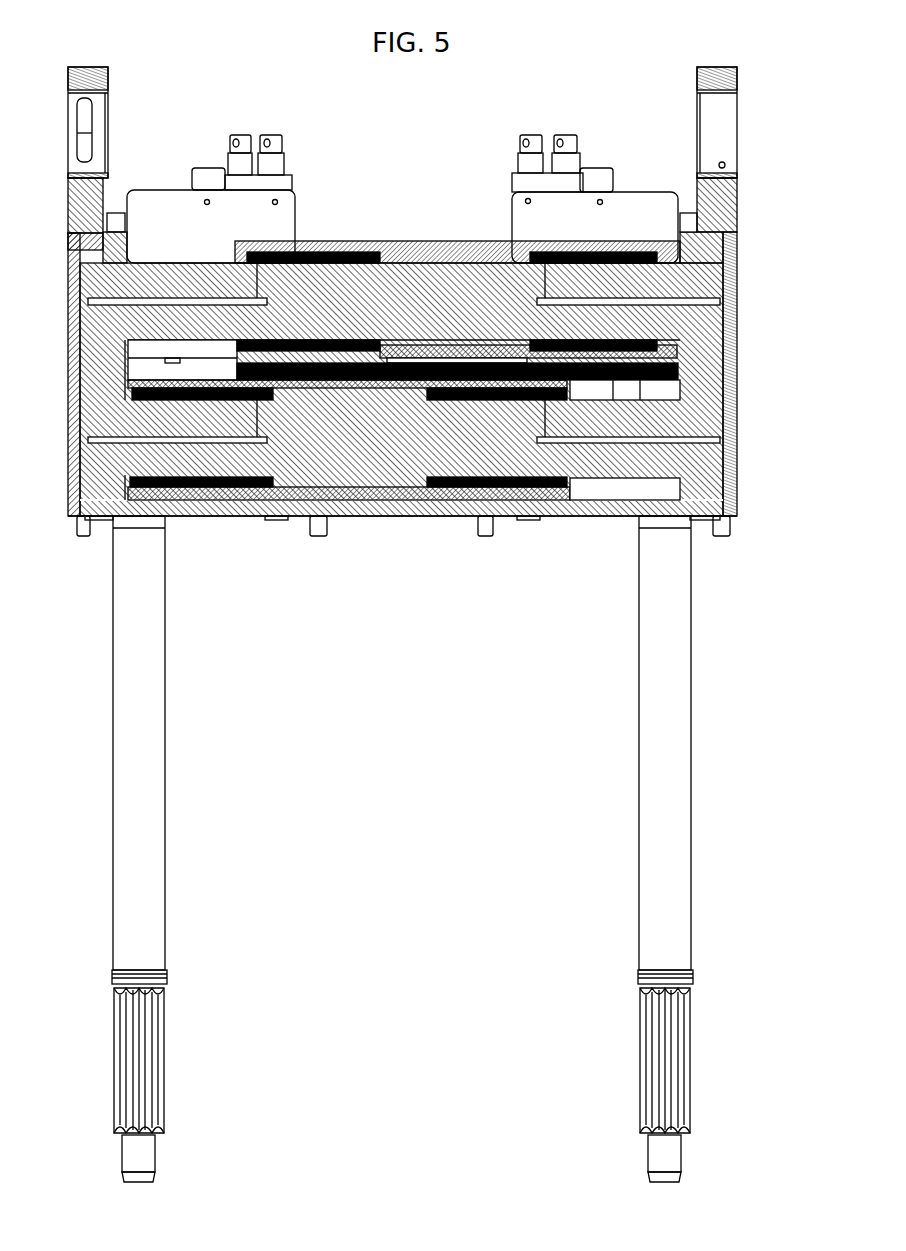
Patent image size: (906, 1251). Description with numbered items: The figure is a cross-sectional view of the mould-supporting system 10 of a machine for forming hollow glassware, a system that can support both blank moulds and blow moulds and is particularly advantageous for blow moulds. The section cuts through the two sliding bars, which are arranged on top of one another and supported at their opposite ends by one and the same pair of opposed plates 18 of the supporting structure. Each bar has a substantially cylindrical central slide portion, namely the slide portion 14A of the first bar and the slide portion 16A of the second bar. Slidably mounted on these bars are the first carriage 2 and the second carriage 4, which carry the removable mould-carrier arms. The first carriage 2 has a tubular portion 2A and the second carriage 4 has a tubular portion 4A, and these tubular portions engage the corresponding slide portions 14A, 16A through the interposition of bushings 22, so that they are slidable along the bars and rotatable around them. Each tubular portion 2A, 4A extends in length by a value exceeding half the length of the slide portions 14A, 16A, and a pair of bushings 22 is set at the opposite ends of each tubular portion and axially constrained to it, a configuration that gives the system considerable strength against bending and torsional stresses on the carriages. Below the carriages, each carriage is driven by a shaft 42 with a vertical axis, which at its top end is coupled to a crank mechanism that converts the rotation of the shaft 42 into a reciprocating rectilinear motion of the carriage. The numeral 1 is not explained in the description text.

The mould-supporting system 10 is at (562, 82).
The frame column 1 is at (735, 215).
The first carriage 2 is at (625, 228).
The tubular portion of the first carriage 2A is at (465, 241).
The second carriage 4 is at (175, 235).
The tubular portion of the second carriage 4A is at (400, 487).
The central slide portion of the first sliding bar 14A is at (408, 300).
The central slide portion of the second sliding bar 16A is at (345, 455).
The opposed plates 18 is at (63, 356).
The bushings 22 is at (330, 250).
The shaft 42 is at (165, 840).